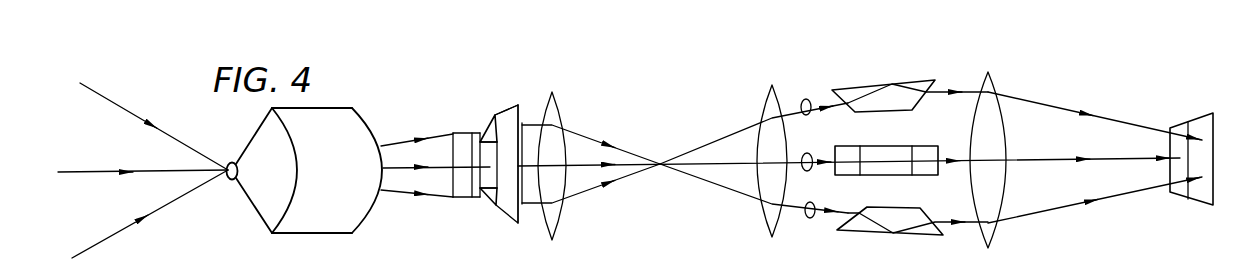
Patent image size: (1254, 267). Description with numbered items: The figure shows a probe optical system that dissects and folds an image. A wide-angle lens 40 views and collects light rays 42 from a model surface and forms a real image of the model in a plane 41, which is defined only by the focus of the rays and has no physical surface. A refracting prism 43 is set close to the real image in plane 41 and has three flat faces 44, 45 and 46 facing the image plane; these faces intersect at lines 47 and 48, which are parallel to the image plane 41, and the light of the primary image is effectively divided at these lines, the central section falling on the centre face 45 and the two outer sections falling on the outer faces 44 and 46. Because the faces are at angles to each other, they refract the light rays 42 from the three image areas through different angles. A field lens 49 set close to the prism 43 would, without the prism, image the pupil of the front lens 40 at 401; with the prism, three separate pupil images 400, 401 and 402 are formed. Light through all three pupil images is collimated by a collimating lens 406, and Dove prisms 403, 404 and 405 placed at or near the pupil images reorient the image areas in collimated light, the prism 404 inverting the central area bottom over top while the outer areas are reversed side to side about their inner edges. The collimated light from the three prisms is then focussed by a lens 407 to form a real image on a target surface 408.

The wide-angle lens 40 is at (347, 182).
The plane 41 is at (463, 135).
The light rays 42 is at (116, 104).
The refracting prism 43 is at (519, 114).
The flat face 44 is at (502, 108).
The centre face 45 is at (489, 200).
The flat face 46 is at (506, 222).
The line 47 is at (489, 127).
The line 48 is at (483, 196).
The field lens 49 is at (566, 218).
The pupil image 400 is at (808, 219).
The pupil image 401 is at (811, 171).
The pupil image 402 is at (811, 114).
The Dove prism 403 is at (903, 236).
The Dove prism 404 is at (887, 173).
The Dove prism 405 is at (931, 85).
The collimating lens 406 is at (766, 222).
The lens 407 is at (1000, 90).
The target surface 408 is at (1202, 115).